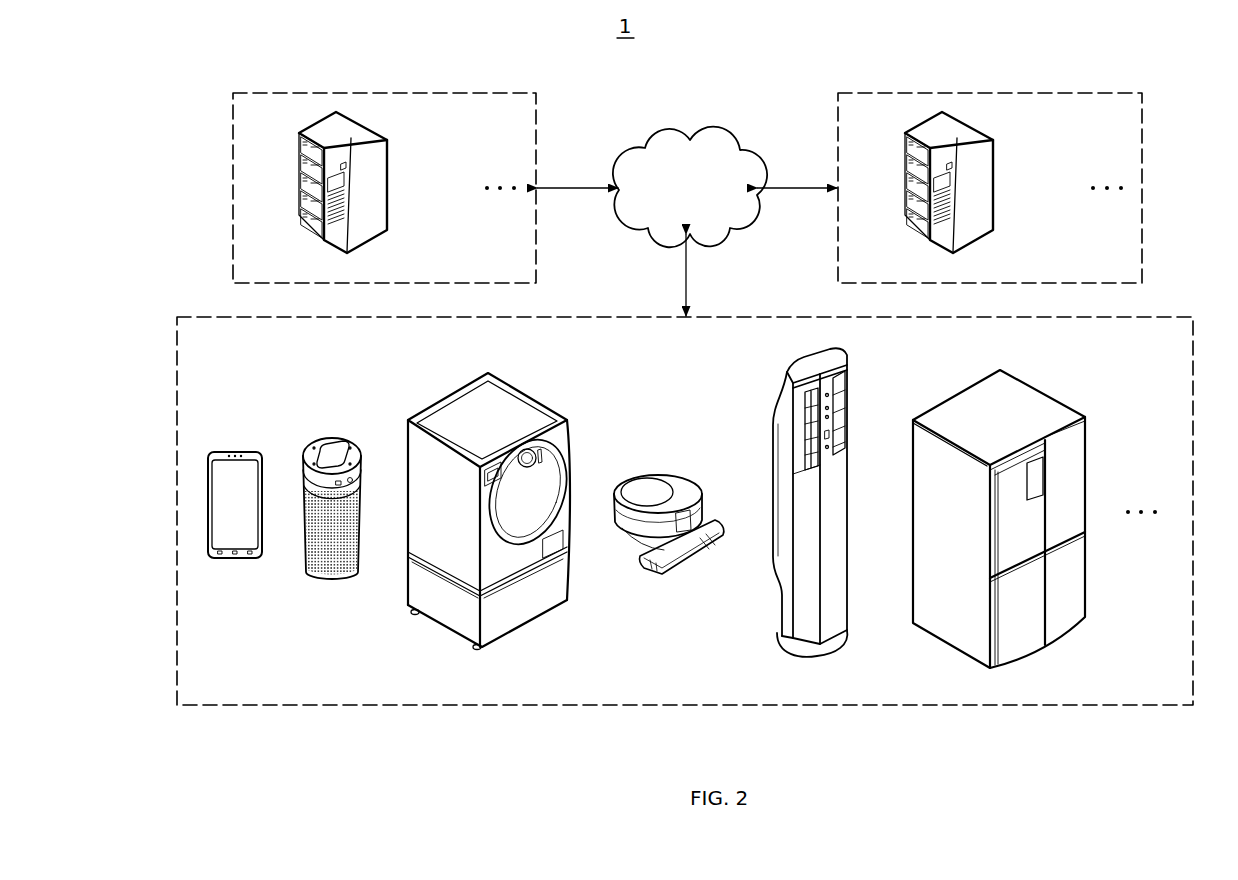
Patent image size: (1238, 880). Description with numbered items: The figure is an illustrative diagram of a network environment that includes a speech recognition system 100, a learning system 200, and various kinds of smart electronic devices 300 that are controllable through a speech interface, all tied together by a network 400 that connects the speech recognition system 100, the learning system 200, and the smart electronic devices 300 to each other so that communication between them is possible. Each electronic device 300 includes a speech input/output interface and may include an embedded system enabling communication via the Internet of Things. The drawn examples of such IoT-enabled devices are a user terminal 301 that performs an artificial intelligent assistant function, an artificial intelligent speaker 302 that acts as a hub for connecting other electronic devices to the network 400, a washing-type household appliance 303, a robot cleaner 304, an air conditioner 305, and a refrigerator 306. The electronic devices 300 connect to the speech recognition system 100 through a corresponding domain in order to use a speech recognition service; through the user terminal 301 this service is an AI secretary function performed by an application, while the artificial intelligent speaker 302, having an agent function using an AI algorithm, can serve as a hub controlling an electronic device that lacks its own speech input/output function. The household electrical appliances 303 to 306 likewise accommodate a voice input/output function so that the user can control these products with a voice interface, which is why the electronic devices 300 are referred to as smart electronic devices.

The speech recognition system 100 is at (489, 93).
The learning system 200 is at (1098, 93).
The smart electronic devices 300 is at (1144, 317).
The user terminal 301 is at (235, 450).
The artificial intelligent speaker 302 is at (348, 438).
The household electrical appliance 303 is at (528, 393).
The robot cleaner 304 is at (682, 478).
The air conditioner 305 is at (848, 380).
The refrigerator 306 is at (1052, 393).
The network 400 is at (685, 138).